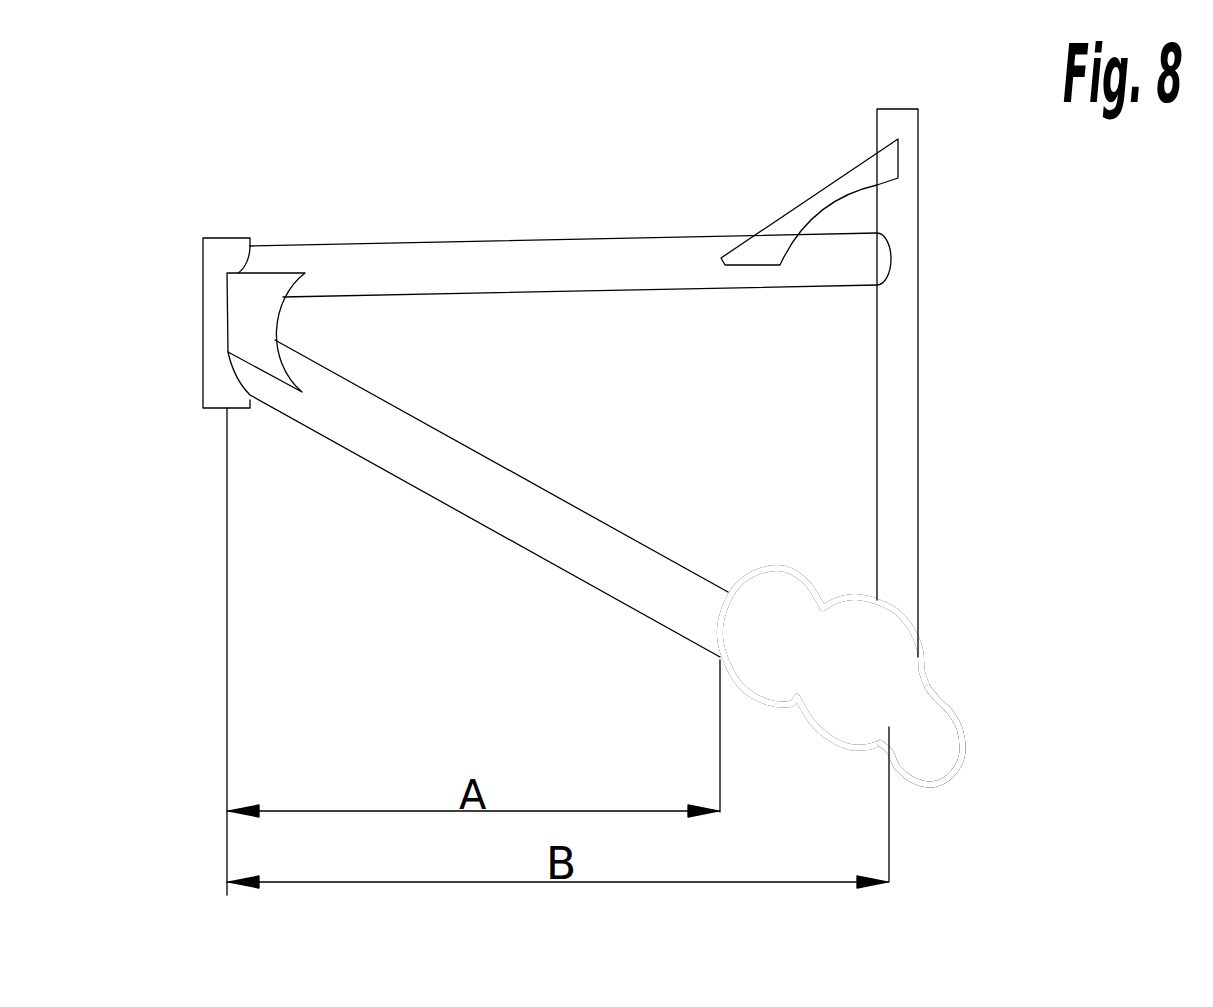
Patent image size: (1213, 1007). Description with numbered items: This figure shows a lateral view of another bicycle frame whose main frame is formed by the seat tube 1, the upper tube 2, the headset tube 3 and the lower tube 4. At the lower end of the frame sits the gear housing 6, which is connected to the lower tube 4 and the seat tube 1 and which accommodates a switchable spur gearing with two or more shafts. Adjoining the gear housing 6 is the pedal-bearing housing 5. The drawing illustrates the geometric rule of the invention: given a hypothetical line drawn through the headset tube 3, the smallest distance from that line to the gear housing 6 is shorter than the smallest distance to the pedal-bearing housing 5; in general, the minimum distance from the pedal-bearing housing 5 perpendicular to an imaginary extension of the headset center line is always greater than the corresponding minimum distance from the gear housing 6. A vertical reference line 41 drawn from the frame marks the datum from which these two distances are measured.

The seat tube 1 is at (907, 462).
The upper tube 2 is at (598, 253).
The headset tube 3 is at (215, 340).
The lower tube 4 is at (550, 540).
The reference line 41 is at (233, 551).
The pedal-bearing housing 5 is at (937, 742).
The gear housing 6 is at (875, 630).